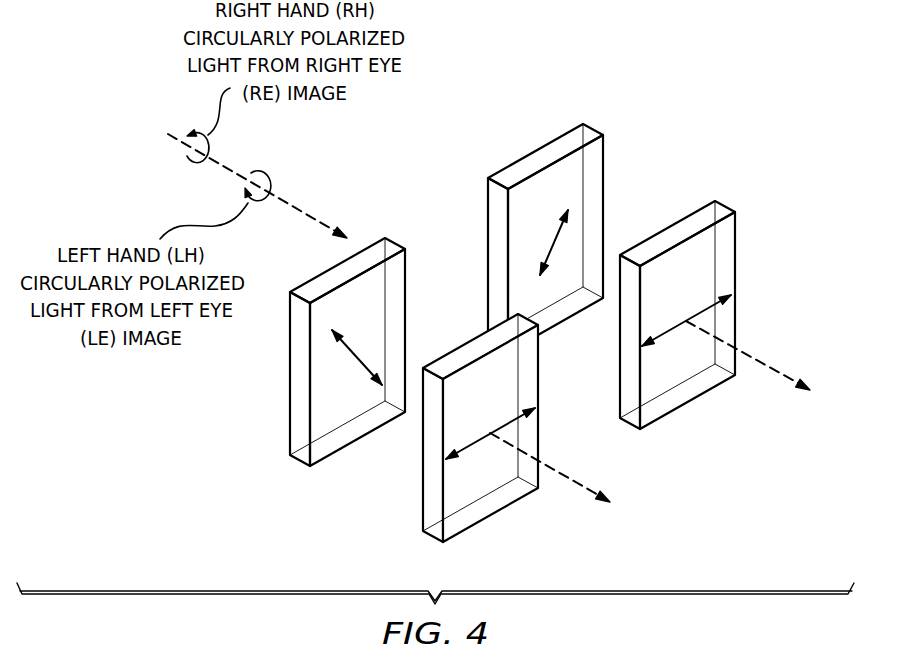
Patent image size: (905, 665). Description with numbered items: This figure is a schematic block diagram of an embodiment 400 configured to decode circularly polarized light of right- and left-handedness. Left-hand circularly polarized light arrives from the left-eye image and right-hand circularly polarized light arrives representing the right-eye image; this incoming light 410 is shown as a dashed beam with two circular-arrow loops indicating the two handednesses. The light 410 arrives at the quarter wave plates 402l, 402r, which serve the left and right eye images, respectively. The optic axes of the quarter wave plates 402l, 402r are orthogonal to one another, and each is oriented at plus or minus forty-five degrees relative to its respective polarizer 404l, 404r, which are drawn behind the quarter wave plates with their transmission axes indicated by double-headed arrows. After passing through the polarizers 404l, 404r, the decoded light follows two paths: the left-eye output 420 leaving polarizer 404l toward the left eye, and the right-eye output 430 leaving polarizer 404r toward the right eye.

The stereoscopic polarization optical system 400 is at (733, 90).
The light 410 is at (316, 218).
The quarter wave plate 402l is at (290, 408).
The quarter wave plate 402r is at (602, 158).
The polarizer 404l is at (423, 505).
The polarizer 404r is at (735, 262).
The left eye image light 420 is at (579, 487).
The right eye image light 430 is at (774, 370).